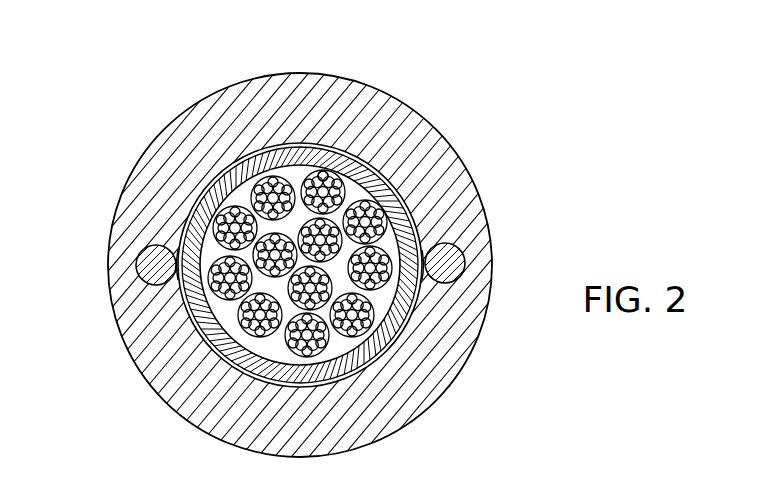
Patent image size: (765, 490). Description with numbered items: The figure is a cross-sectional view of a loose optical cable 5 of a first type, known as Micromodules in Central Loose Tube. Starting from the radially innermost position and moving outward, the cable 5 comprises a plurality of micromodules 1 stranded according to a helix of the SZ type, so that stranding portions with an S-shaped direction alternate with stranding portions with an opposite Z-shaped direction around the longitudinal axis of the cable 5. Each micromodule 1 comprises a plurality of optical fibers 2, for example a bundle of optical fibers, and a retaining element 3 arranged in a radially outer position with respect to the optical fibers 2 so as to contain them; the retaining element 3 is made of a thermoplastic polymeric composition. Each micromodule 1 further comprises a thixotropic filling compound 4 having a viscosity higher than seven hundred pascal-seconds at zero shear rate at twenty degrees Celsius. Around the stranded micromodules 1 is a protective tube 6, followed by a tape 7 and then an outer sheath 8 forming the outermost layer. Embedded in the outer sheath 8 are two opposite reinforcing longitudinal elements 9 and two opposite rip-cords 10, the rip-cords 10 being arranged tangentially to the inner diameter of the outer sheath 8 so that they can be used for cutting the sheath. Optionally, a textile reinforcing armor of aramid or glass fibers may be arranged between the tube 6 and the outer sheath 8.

The micromodule 1 is at (355, 179).
The optical fibers 2 is at (341, 178).
The retaining element 3 is at (322, 174).
The filling compound 4 is at (303, 176).
The cable 5 is at (140, 381).
The protective tube 6 is at (383, 322).
The tape 7 is at (363, 365).
The outer sheath 8 is at (165, 150).
The reinforcing longitudinal elements 9 is at (150, 271).
The rip-cords 10 is at (176, 244).